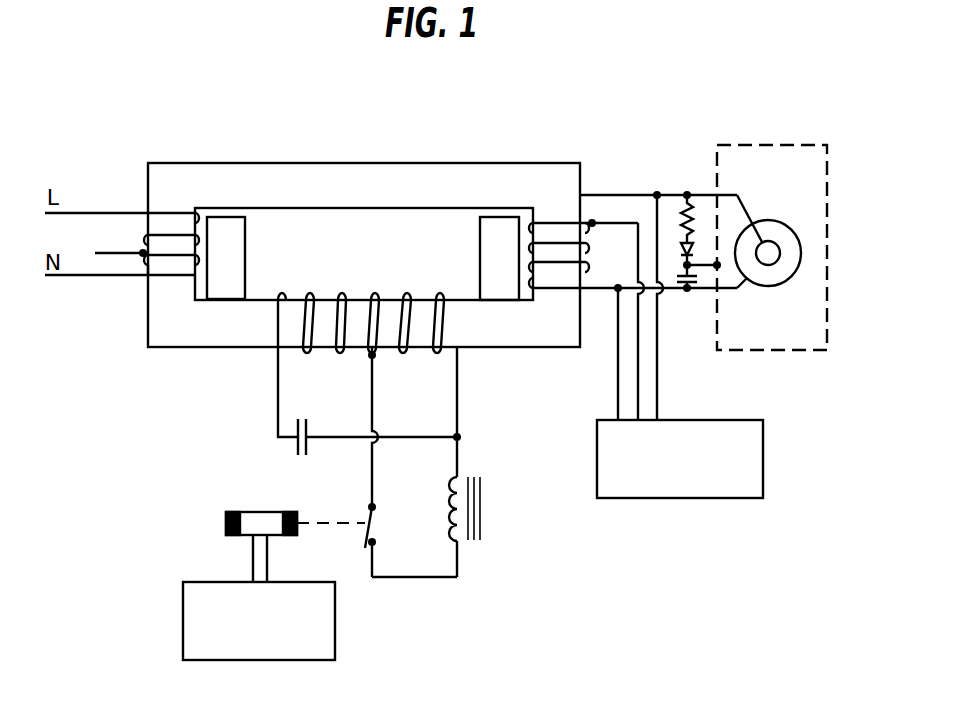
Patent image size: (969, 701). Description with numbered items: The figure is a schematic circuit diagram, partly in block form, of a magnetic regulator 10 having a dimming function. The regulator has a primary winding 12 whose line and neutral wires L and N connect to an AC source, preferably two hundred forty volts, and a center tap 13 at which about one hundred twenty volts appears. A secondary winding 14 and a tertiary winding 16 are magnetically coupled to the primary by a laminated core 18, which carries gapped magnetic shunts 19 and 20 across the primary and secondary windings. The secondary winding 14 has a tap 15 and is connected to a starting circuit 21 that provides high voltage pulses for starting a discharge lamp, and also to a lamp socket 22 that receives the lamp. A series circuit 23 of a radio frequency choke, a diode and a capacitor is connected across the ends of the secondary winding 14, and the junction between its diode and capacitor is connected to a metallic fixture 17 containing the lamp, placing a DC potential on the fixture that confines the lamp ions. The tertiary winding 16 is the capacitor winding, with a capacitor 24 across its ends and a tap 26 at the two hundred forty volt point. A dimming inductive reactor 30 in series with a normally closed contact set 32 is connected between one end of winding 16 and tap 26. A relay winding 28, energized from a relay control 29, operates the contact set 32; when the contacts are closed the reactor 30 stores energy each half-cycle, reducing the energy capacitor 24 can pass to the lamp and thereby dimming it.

The magnetic regulator 10 is at (388, 145).
The primary winding 12 is at (167, 210).
The center tap 13 is at (140, 252).
The secondary winding 14 is at (548, 220).
The tap 15 is at (592, 223).
The tertiary winding 16 is at (310, 293).
The metallic fixture 17 is at (763, 136).
The laminated core 18 is at (247, 163).
The magnetic shunt 19 is at (248, 253).
The magnetic shunt 20 is at (480, 252).
The starting circuit 21 is at (768, 435).
The lamp socket 22 is at (801, 230).
The series circuit 23 is at (673, 224).
The capacitor 24 is at (290, 447).
The tap 26 is at (374, 358).
The relay winding 28 is at (250, 512).
The relay control 29 is at (342, 635).
The dimming inductive reactor 30 is at (486, 512).
The contact set 32 is at (380, 521).